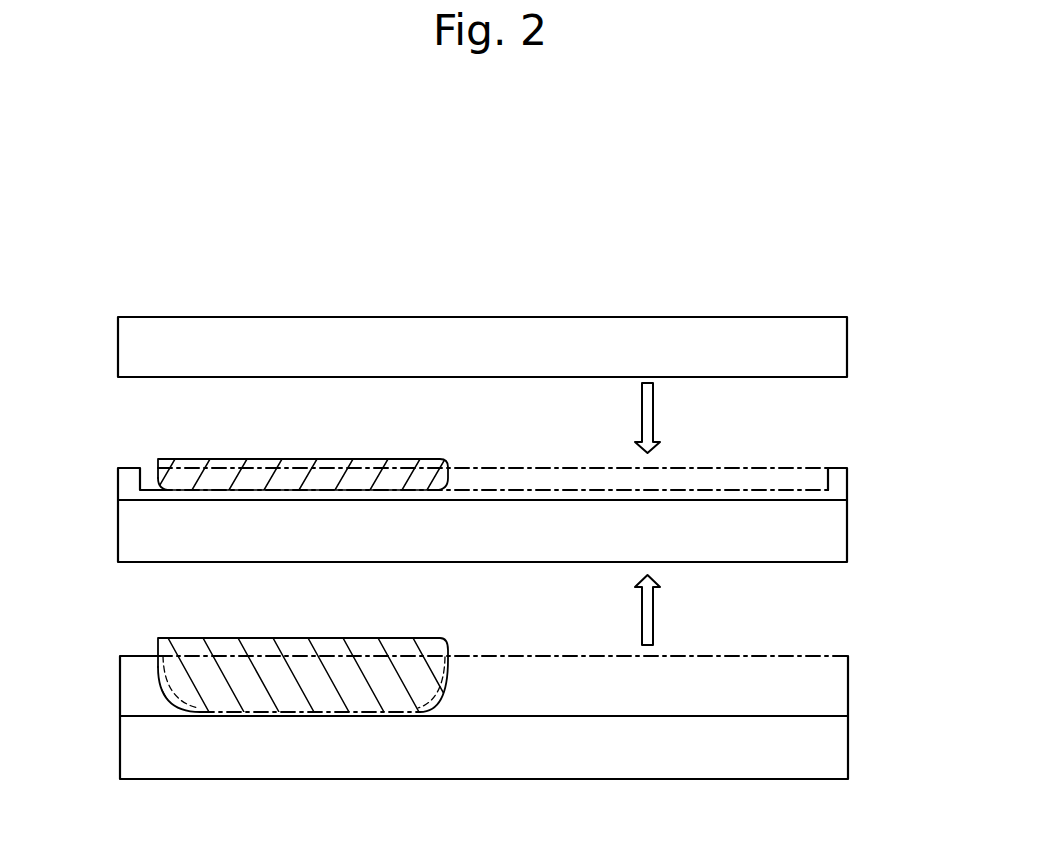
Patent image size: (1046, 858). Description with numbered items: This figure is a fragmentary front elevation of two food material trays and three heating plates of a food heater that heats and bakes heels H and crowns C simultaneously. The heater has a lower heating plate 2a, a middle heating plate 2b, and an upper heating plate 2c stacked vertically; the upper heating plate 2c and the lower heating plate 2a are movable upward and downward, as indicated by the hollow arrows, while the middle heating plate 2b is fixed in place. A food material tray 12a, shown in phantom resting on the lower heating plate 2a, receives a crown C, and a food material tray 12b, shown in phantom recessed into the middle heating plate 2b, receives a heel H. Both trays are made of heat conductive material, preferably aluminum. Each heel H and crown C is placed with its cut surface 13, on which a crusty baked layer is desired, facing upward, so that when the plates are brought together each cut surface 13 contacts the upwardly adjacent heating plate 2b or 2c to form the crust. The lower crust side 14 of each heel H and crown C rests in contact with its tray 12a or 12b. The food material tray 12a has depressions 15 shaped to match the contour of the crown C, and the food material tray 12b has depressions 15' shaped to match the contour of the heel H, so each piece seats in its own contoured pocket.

The lower heating plate 2a is at (825, 758).
The middle heating plate 2b is at (825, 543).
The upper heating plate 2c is at (820, 348).
The food material tray 12a is at (817, 673).
The food material tray 12b is at (838, 478).
The cut surface 13 is at (303, 457).
The lower crust side 14 is at (258, 490).
The depression 15 is at (262, 664).
The depression 15' is at (121, 450).
The heel H is at (168, 455).
The crown C is at (215, 638).